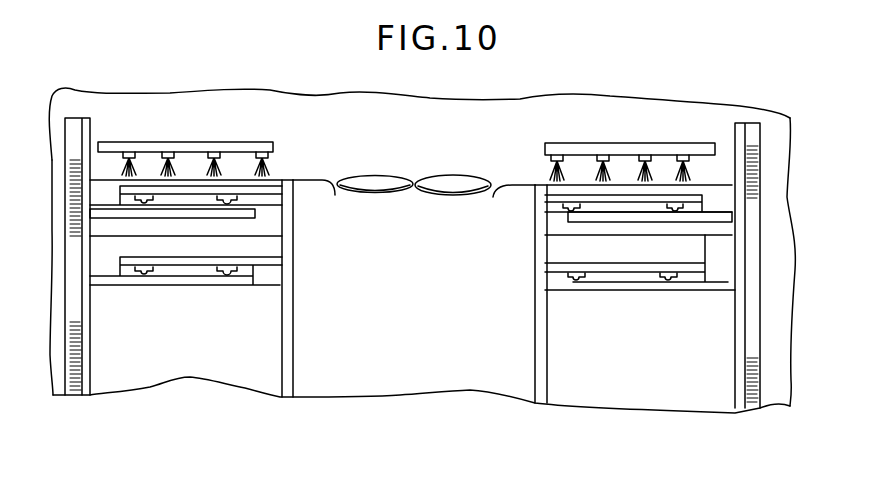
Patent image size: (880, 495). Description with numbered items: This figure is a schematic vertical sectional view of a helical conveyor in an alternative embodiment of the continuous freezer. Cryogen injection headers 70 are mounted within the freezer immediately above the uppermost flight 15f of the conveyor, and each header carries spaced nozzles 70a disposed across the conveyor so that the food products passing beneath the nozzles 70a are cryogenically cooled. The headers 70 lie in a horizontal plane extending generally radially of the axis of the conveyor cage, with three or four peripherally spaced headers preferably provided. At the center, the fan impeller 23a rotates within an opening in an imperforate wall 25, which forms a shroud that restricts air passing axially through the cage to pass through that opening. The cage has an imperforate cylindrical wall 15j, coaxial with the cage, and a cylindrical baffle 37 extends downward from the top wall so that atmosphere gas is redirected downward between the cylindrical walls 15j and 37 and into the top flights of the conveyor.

The cryogen injection header 70 is at (168, 141).
The nozzle 70a is at (137, 142).
The impeller 23a is at (448, 176).
The imperforate wall 25 is at (309, 181).
The uppermost flight 15f is at (117, 193).
The imperforate cylindrical wall 15j is at (292, 290).
The cylindrical baffle 37 is at (93, 345).